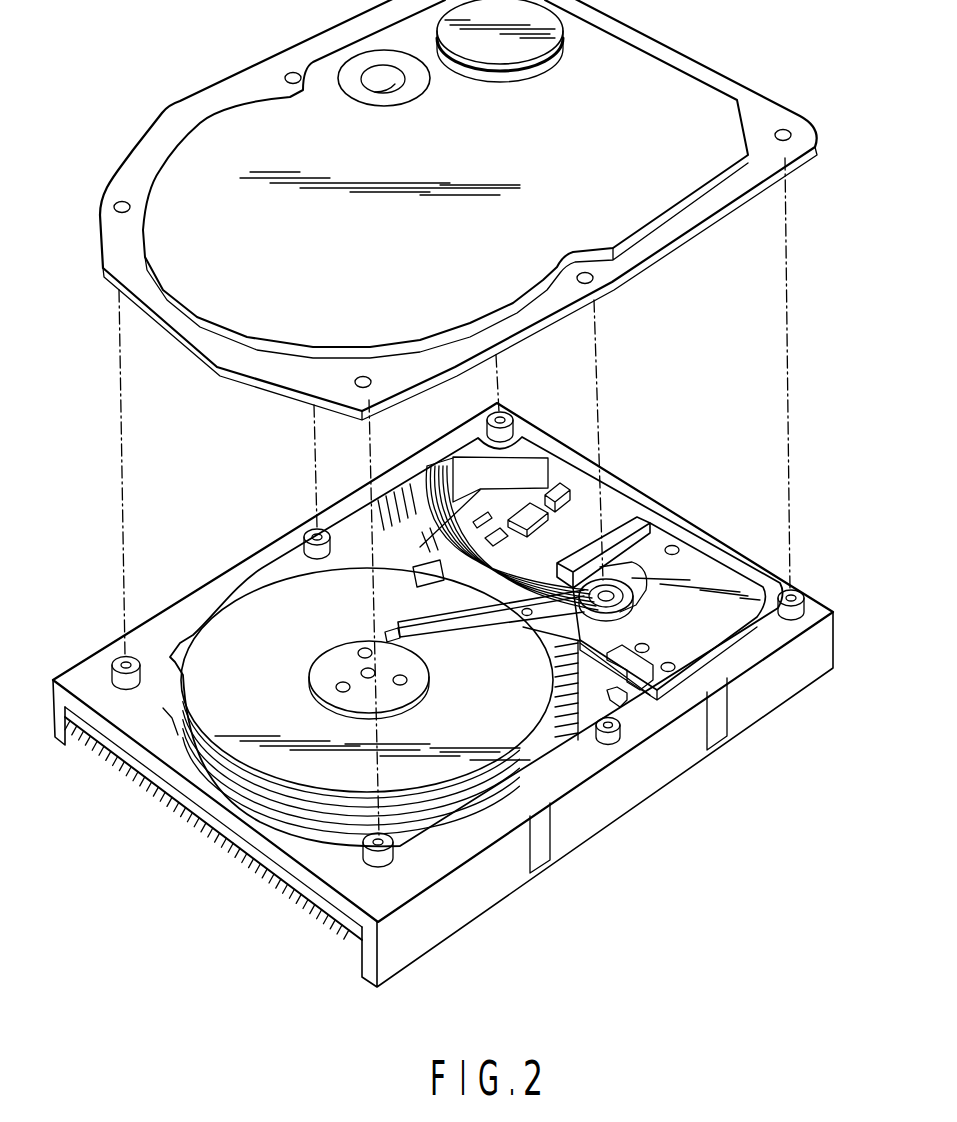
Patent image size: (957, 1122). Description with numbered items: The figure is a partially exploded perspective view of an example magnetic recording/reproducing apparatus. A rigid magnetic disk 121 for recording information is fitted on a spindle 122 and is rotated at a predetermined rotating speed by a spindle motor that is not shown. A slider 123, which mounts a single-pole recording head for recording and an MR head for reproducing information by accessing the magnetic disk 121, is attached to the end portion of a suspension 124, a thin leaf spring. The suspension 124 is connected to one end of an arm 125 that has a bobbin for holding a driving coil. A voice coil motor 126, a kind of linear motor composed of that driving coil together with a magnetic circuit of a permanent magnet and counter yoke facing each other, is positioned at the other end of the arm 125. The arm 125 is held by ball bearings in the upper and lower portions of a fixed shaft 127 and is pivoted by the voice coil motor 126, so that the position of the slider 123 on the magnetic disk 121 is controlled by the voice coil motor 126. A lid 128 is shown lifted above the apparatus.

The rigid magnetic disk 121 is at (223, 647).
The spindle 122 is at (320, 678).
The slider 123 is at (390, 633).
The suspension 124 is at (460, 625).
The arm 125 is at (523, 626).
The voice coil motor 126 is at (708, 572).
The fixed shaft 127 is at (633, 602).
The lid 128 is at (677, 90).